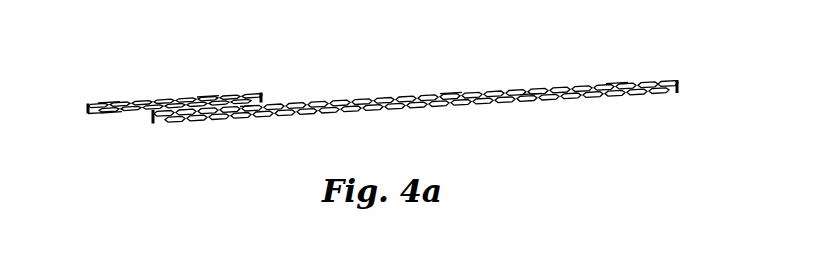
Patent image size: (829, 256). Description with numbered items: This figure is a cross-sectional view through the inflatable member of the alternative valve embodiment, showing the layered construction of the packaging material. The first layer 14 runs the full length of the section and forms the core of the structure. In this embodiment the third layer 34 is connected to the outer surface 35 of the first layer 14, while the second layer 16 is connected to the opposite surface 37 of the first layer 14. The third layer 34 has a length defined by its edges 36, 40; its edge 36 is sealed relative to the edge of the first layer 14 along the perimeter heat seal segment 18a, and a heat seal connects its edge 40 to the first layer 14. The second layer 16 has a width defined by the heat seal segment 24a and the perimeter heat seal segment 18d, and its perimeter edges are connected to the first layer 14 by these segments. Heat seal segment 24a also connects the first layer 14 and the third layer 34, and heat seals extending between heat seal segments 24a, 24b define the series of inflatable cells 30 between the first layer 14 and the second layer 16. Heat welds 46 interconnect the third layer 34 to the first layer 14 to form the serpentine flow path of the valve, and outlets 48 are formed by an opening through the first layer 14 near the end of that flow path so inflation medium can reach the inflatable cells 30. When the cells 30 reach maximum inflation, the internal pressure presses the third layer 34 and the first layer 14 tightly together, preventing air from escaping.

The first layer 14 is at (386, 87).
The second layer 16 is at (366, 113).
The perimeter heat seal segment 18a is at (90, 112).
The perimeter heat seal segment 18d is at (676, 85).
The heat seal segment 24a is at (153, 108).
The heat seal segment 24b is at (615, 87).
The inflatable cell 30 is at (528, 92).
The third layer 34 is at (110, 102).
The outer surface 35 is at (448, 93).
The edge 36 is at (89, 107).
The surface 37 is at (108, 117).
The edge 40 is at (259, 92).
The heat welds 46 is at (218, 102).
The outlets 48 is at (247, 107).